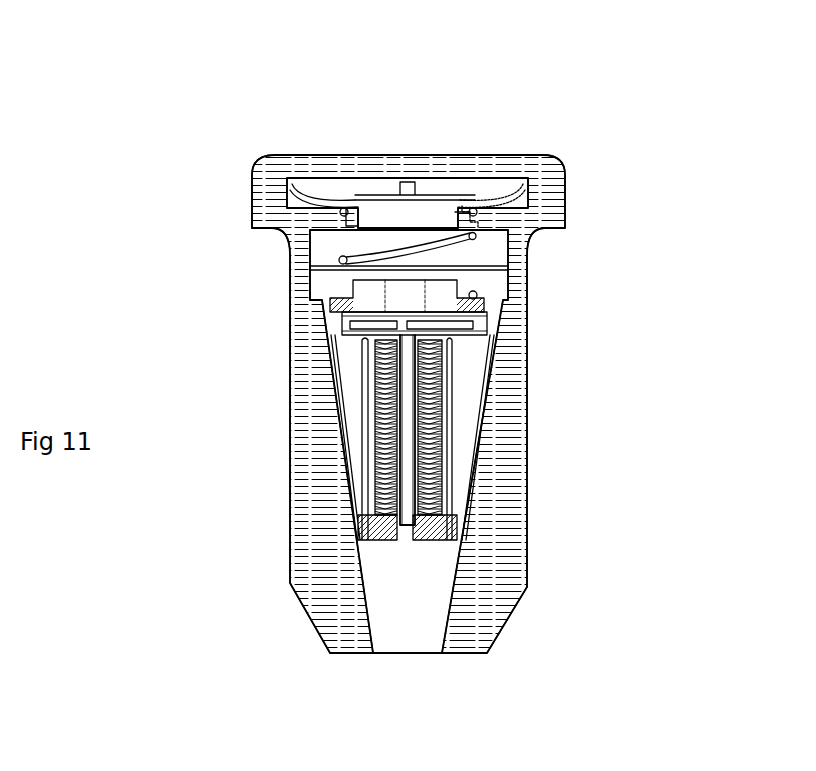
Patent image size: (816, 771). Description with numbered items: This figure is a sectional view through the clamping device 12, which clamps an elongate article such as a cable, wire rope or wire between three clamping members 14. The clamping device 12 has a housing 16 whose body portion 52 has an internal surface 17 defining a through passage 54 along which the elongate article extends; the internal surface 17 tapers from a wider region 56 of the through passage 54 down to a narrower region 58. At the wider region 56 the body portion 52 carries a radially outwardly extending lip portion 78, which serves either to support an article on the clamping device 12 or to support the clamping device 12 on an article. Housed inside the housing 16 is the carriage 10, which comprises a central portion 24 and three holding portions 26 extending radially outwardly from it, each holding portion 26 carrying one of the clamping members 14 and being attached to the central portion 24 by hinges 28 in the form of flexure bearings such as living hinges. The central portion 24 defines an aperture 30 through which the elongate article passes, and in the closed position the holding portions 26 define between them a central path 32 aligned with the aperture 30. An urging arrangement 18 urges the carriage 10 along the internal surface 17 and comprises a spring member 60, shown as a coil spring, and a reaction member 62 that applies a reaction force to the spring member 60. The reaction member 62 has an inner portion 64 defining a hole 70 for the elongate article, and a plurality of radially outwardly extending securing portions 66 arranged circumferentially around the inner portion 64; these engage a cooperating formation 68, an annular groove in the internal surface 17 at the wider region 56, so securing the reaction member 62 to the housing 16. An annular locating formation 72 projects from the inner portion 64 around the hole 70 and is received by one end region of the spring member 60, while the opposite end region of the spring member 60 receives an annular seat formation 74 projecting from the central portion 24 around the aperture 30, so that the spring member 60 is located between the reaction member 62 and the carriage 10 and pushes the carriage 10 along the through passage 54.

The carriage 10 is at (478, 361).
The clamping device 12 is at (237, 512).
The clamping members 14 is at (383, 458).
The housing 16 is at (302, 368).
The internal surface 17 is at (360, 553).
The urging arrangement 18 is at (482, 260).
The central portion 24 is at (330, 305).
The holding portions 26 is at (353, 398).
The hinges 28 is at (487, 325).
The aperture 30 is at (365, 308).
The central path 32 is at (408, 485).
The body portion 52 is at (313, 593).
The through passage 54 is at (358, 550).
The wider region 56 is at (310, 287).
The narrower region 58 is at (373, 635).
The spring member 60 is at (477, 236).
The reaction member 62 is at (315, 197).
The inner portion 64 is at (360, 205).
The securing portions 66 is at (497, 193).
The cooperating formation 68 is at (517, 208).
The hole 70 is at (370, 210).
The locating formation 72 is at (358, 220).
The seat formation 74 is at (467, 288).
The lip portion 78 is at (553, 218).